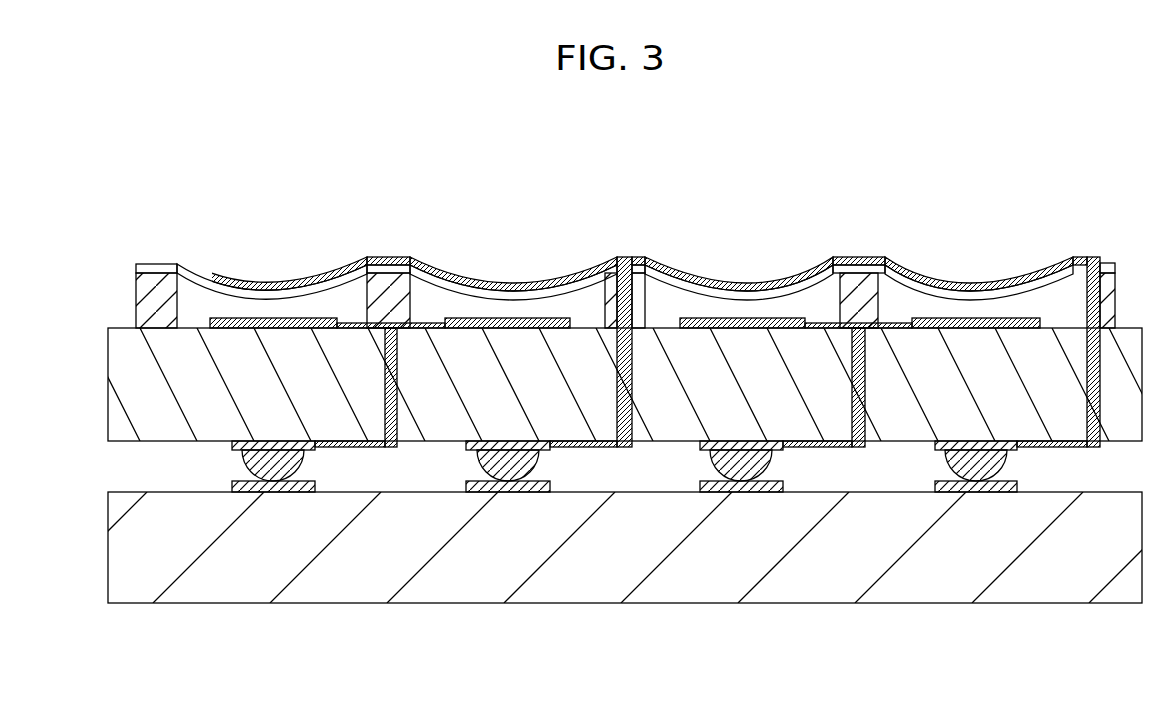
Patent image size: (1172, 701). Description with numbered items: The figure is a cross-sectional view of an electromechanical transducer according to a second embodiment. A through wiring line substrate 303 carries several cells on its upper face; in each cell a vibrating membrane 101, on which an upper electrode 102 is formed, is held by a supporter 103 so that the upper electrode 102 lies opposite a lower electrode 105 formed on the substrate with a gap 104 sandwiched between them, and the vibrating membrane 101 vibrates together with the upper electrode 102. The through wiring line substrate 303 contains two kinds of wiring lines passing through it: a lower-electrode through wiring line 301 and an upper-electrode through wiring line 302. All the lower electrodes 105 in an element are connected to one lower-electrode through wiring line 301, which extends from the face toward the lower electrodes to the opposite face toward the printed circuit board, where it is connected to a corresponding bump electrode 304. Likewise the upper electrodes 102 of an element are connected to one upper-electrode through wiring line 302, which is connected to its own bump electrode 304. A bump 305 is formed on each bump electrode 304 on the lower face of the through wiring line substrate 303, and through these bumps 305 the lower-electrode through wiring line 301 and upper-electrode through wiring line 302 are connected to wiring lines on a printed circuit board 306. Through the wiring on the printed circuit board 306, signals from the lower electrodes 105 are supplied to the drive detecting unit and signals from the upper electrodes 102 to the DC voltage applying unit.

The vibrating membrane 101 is at (148, 268).
The upper electrode 102 is at (233, 278).
The supporter 103 is at (135, 297).
The gap 104 is at (313, 278).
The lower electrode 105 is at (280, 320).
The lower-electrode through wiring line 301 is at (383, 403).
The upper-electrode through wiring line 302 is at (617, 397).
The through wiring line substrate 303 is at (125, 399).
The bump electrode 304 is at (712, 490).
The bump 305 is at (743, 473).
The printed circuit board 306 is at (1017, 590).